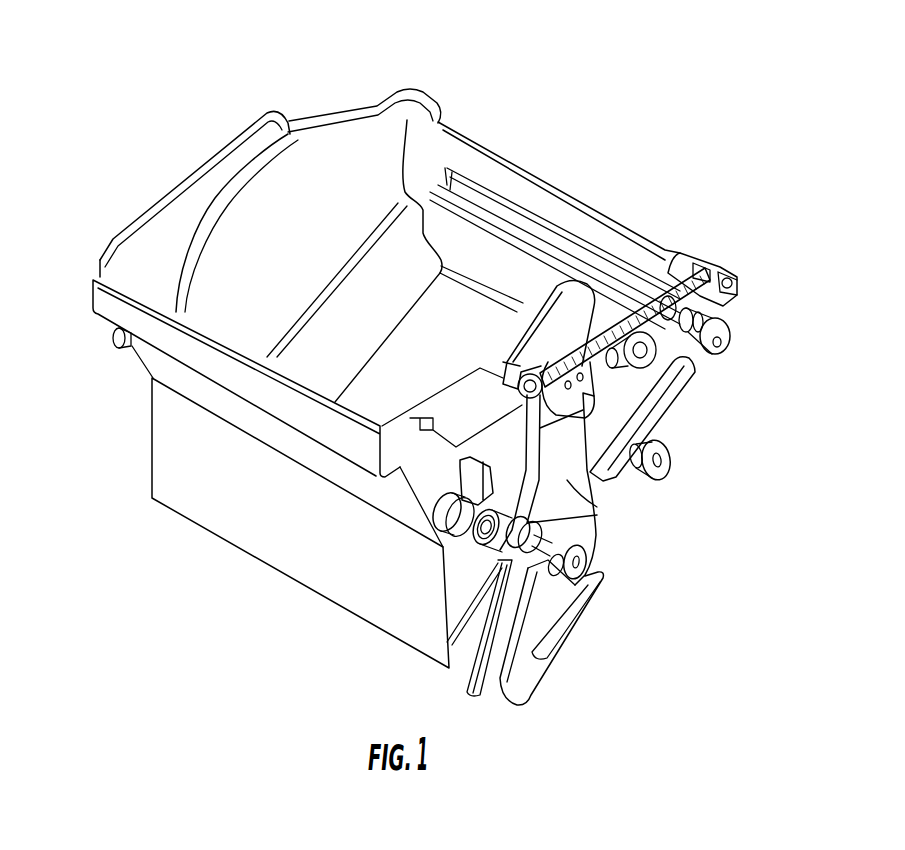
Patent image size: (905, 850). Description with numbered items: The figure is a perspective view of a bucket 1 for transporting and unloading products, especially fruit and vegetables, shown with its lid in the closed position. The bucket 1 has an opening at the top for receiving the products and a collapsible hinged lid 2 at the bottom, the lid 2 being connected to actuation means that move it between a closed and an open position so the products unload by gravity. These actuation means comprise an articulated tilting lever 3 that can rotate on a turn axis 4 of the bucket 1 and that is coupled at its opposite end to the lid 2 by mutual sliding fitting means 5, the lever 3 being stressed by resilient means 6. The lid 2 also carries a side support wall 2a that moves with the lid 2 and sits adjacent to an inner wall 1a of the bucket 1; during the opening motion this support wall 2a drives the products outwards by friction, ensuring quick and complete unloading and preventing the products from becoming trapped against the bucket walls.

The bucket 1 is at (611, 93).
The inner wall 1a is at (170, 228).
The collapsible hinged lid 2 is at (463, 307).
The side support wall 2a is at (338, 157).
The articulated tilting lever 3 is at (567, 480).
The turn axis 4 is at (680, 378).
The mutual sliding fitting means 5 is at (682, 461).
The resilient means 6 is at (679, 302).